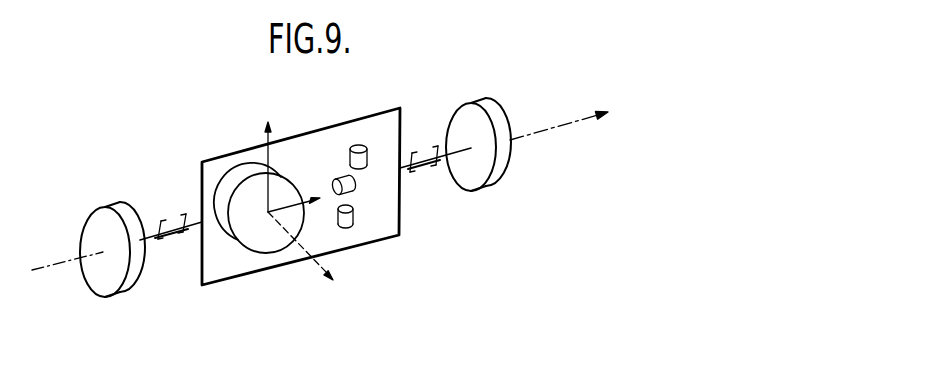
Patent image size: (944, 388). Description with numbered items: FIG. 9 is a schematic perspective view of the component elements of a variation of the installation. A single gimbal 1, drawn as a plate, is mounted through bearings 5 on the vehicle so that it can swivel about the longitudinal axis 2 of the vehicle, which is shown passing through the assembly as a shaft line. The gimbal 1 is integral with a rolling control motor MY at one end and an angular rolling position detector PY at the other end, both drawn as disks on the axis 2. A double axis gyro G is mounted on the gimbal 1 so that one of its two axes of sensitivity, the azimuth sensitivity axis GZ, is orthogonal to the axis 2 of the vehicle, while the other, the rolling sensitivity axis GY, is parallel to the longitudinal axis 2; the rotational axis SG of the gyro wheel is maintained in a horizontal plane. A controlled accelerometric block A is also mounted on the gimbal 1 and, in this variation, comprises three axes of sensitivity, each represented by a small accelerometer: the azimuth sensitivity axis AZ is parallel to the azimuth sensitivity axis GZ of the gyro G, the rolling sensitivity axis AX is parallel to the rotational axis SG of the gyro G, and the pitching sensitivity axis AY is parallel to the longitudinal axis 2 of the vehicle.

The gimbal 1 is at (317, 128).
The longitudinal axis 2 is at (558, 126).
The bearings 5 is at (173, 222).
The accelerometric block A is at (358, 150).
The rolling sensitivity axis AX is at (353, 222).
The pitching sensitivity axis AY is at (382, 142).
The azimuth sensitivity axis AZ is at (333, 175).
The double axis gyro G is at (238, 232).
The rolling sensitivity axis GY is at (296, 188).
The azimuth sensitivity axis GZ is at (261, 152).
The rotational axis SG is at (314, 260).
The rolling control motor MY is at (100, 278).
The angular rolling position detector PY is at (480, 178).